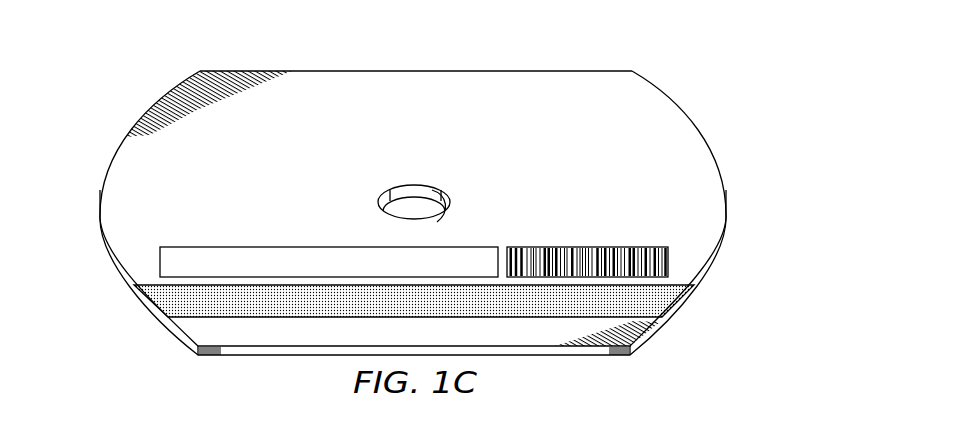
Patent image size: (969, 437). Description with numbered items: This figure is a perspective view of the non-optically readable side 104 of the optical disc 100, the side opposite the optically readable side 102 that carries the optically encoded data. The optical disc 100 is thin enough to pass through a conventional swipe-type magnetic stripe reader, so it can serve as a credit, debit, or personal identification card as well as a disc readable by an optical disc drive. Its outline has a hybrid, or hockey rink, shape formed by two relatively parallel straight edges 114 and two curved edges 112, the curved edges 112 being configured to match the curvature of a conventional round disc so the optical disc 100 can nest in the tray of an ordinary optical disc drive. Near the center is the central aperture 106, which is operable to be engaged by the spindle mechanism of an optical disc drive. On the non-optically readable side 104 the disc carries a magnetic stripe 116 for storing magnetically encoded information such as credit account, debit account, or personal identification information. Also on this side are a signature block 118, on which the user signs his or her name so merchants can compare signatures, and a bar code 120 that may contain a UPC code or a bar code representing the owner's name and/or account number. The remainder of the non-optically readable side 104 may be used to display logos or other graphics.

The optical disc 100 is at (120, 108).
The optically readable side 102 is at (549, 88).
The non-optically readable side 104 is at (193, 329).
The central aperture 106 is at (432, 190).
The curved edges 112 is at (100, 212).
The straight edges 114 is at (312, 71).
The magnetic stripe 116 is at (697, 297).
The signature block 118 is at (238, 246).
The bar code 120 is at (634, 247).